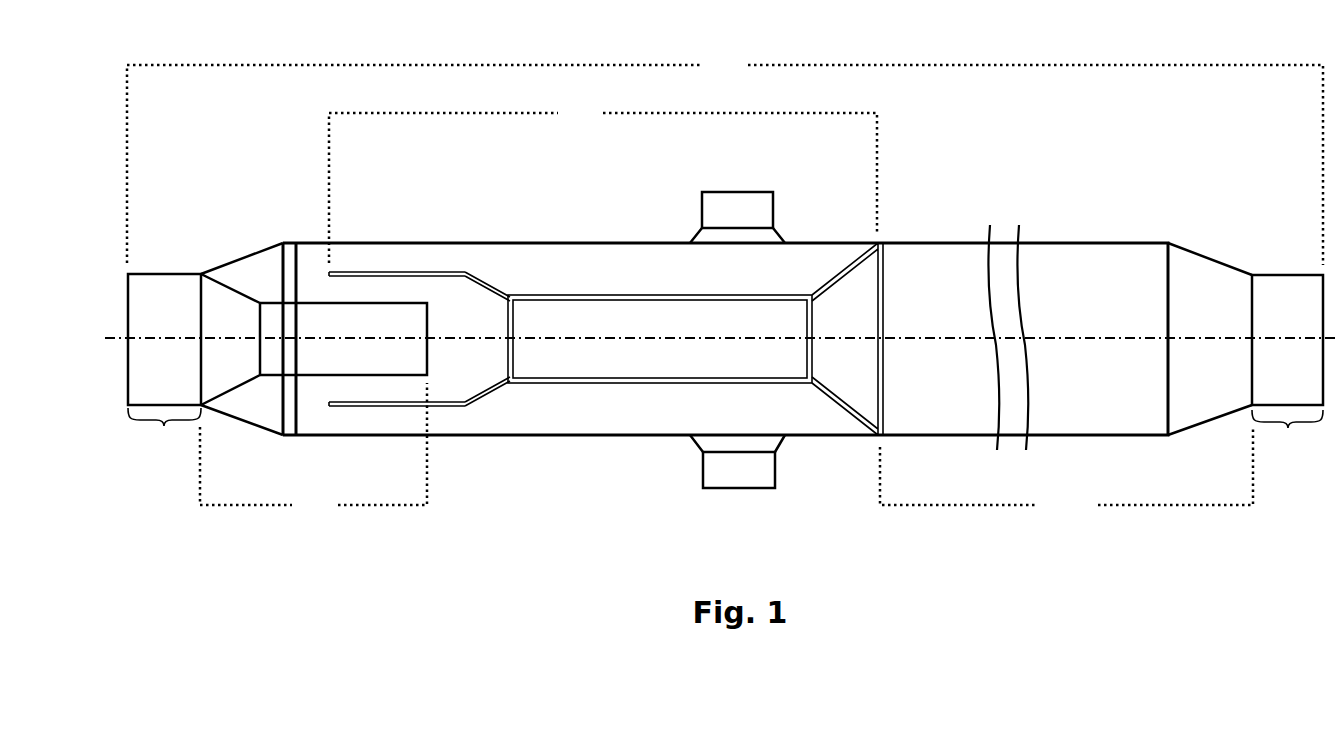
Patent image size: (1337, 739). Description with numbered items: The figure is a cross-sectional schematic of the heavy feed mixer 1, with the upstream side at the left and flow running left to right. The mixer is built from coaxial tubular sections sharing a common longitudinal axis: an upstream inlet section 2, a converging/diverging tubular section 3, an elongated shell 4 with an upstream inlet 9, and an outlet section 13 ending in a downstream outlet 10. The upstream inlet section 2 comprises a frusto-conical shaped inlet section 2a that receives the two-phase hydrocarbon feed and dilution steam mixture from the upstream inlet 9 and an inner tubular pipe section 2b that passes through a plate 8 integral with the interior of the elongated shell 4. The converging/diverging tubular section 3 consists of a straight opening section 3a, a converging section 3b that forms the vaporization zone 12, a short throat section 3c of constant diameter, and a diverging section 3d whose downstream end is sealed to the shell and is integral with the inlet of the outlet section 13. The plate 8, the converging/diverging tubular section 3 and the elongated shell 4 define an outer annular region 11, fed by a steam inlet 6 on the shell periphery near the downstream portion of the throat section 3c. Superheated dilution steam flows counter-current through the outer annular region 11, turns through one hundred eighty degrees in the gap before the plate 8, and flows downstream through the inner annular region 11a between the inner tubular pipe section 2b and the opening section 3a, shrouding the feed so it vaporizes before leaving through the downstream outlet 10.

The heavy feed mixer 1 is at (977, 25).
The upstream inlet section 2 is at (313, 450).
The frusto-conical shaped inlet section 2a is at (237, 392).
The inner tubular pipe section 2b is at (321, 299).
The converging/diverging tubular section 3 is at (603, 183).
The opening section 3a is at (402, 412).
The converging section 3b is at (488, 402).
The throat section 3c is at (593, 290).
The diverging section 3d is at (845, 265).
The elongated shell 4 is at (725, 160).
The steam inlet 6 is at (731, 187).
The plate 8 is at (282, 291).
The upstream inlet 9 is at (164, 369).
The downstream outlet 10 is at (1287, 370).
The outer annular region 11 is at (660, 270).
The inner annular region 11a is at (400, 295).
The vaporization zone 12 is at (487, 318).
The outlet section 13 is at (1066, 371).